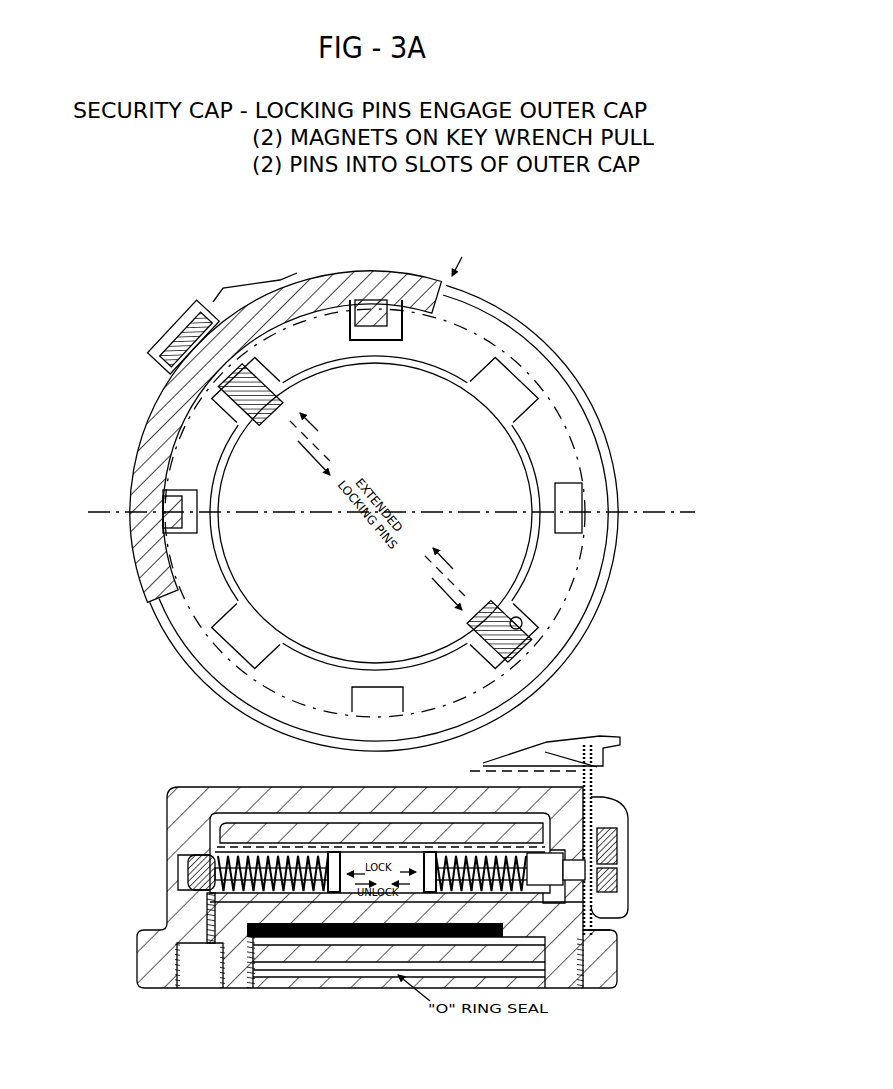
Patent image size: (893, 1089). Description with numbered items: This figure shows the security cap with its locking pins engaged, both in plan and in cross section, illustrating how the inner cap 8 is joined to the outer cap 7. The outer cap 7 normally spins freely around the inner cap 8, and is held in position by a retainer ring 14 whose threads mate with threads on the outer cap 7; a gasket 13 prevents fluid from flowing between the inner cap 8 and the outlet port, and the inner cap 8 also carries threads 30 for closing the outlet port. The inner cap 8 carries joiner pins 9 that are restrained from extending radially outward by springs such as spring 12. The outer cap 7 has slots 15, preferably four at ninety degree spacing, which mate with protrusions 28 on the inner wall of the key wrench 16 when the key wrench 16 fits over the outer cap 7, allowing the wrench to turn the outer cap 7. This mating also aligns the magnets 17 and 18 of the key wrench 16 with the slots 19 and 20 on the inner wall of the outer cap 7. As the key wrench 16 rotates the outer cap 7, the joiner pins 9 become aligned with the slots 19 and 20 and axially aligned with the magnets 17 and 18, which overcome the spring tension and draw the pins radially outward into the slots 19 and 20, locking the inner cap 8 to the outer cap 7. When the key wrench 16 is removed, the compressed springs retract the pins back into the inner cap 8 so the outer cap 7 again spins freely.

The outer cap 7 is at (513, 707).
The inner cap 8 is at (292, 828).
The joiner pin 9 is at (184, 868).
The spring 12 is at (470, 618).
The gasket 13 is at (232, 978).
The retainer ring 14 is at (574, 977).
The slot 15 is at (203, 507).
The key wrench 16 is at (320, 276).
The magnet 17 is at (176, 342).
The magnet 18 is at (625, 858).
The slot 19 is at (375, 510).
The slot 20 is at (507, 633).
The protrusion 28 is at (373, 306).
The inner cap wall / threads 30 is at (440, 645).